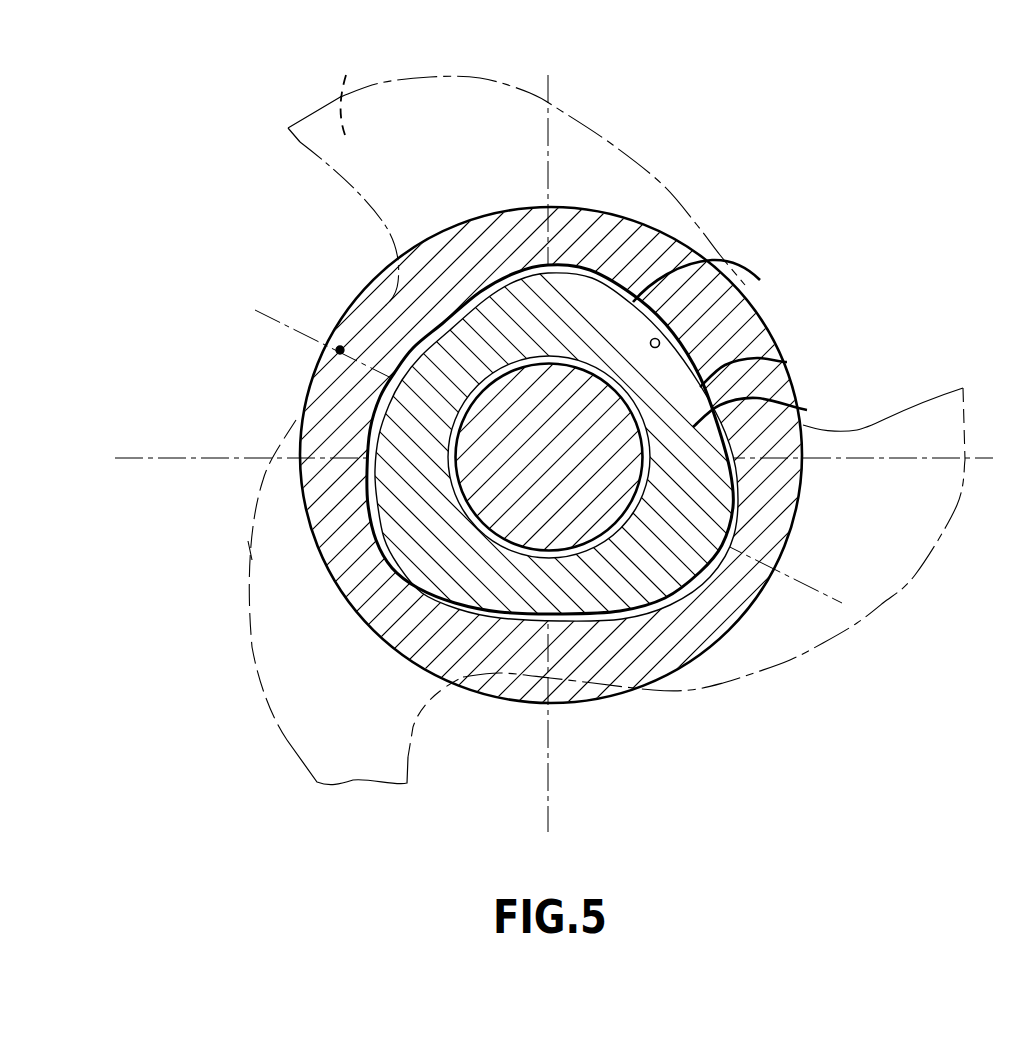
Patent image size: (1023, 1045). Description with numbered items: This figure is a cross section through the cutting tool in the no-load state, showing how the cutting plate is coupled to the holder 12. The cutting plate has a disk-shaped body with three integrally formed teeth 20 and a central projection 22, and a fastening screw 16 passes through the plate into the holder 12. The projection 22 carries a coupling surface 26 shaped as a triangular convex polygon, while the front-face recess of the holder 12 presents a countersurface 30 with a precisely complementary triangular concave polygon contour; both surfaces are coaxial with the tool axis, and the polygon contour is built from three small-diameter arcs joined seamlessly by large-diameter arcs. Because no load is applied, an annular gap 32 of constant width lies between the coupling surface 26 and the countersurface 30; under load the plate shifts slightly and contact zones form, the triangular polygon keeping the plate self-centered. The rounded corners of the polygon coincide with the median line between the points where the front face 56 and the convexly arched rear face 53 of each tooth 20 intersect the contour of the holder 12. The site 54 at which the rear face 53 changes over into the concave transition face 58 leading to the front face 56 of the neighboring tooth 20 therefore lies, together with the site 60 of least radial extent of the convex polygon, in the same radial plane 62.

The holder 12 is at (688, 306).
The fastening screw 16 is at (607, 442).
The tooth 20 is at (346, 75).
The projection 22 is at (807, 410).
The coupling surface 26 is at (787, 362).
The countersurface 30 is at (659, 341).
The annular gap 32 is at (716, 262).
The rear face 53 is at (248, 541).
The site 54 is at (340, 350).
The front face 56 is at (302, 140).
The transition face 58 is at (382, 283).
The site of least radial extent 60 is at (408, 410).
The radial plane 62 is at (258, 308).